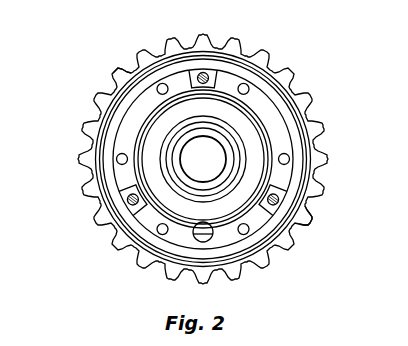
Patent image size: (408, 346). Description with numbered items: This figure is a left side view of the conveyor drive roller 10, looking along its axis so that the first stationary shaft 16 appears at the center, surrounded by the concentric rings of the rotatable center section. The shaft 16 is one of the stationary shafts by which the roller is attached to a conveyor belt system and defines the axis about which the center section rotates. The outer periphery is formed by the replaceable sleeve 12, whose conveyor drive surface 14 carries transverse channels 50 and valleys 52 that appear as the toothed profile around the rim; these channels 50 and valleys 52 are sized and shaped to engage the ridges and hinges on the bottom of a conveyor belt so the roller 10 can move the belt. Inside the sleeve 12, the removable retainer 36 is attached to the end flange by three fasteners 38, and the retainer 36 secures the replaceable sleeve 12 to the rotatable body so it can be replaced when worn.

The conveyor drive roller 10 is at (342, 71).
The replaceable sleeve 12 is at (317, 222).
The conveyor drive surface 14 is at (311, 107).
The first stationary shaft 16 is at (196, 167).
The removable retainer 36 is at (265, 173).
The fasteners 38 is at (161, 83).
The transverse channels 50 is at (103, 70).
The valleys 52 is at (92, 112).